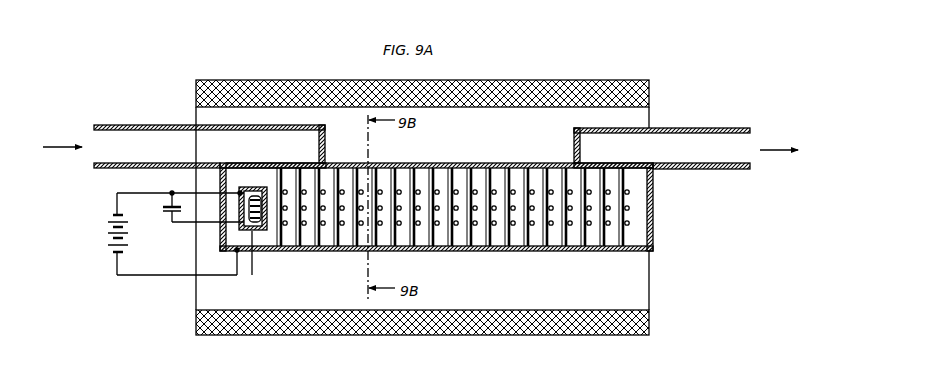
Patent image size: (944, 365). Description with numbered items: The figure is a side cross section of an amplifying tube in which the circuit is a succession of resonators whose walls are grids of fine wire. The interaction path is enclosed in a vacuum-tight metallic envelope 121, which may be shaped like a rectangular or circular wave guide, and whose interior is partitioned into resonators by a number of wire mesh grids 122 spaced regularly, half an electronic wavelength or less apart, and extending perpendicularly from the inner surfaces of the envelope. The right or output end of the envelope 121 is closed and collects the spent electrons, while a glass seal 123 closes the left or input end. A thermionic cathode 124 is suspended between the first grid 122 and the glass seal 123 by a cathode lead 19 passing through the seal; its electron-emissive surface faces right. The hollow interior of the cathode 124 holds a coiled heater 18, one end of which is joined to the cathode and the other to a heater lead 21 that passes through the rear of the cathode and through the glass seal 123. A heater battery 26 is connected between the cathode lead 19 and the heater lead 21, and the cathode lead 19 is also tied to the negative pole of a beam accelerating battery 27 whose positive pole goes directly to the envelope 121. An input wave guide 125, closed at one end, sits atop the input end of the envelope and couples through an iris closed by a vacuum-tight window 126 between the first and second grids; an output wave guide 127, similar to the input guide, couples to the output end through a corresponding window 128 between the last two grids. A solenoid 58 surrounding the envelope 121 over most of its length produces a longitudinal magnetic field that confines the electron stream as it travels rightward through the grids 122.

The solenoid 58 is at (240, 81).
The input wave guide 125 is at (156, 122).
The output wave guide 127 is at (690, 127).
The vacuum-tight metallic envelope 121 is at (442, 163).
The window 126 is at (290, 162).
The window 128 is at (610, 162).
The wire mesh grids 122 is at (530, 233).
The glass seal 123 is at (222, 224).
The thermionic cathode 124 is at (260, 231).
The coiled heater 18 is at (254, 265).
The cathode lead 19 is at (192, 192).
The heater lead 21 is at (205, 221).
The heater battery 26 is at (168, 214).
The beam accelerating battery 27 is at (105, 234).